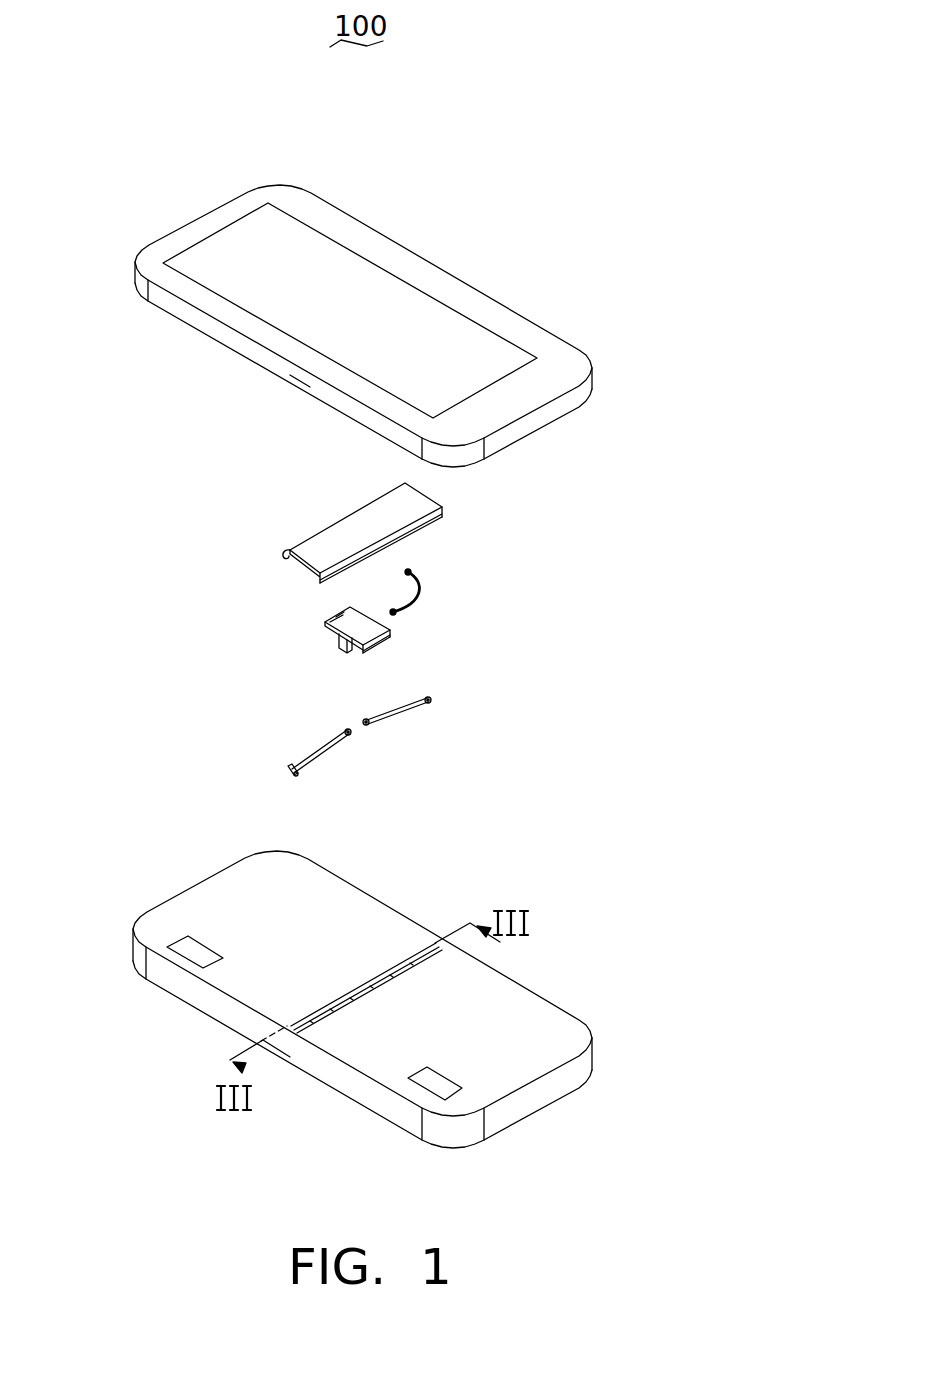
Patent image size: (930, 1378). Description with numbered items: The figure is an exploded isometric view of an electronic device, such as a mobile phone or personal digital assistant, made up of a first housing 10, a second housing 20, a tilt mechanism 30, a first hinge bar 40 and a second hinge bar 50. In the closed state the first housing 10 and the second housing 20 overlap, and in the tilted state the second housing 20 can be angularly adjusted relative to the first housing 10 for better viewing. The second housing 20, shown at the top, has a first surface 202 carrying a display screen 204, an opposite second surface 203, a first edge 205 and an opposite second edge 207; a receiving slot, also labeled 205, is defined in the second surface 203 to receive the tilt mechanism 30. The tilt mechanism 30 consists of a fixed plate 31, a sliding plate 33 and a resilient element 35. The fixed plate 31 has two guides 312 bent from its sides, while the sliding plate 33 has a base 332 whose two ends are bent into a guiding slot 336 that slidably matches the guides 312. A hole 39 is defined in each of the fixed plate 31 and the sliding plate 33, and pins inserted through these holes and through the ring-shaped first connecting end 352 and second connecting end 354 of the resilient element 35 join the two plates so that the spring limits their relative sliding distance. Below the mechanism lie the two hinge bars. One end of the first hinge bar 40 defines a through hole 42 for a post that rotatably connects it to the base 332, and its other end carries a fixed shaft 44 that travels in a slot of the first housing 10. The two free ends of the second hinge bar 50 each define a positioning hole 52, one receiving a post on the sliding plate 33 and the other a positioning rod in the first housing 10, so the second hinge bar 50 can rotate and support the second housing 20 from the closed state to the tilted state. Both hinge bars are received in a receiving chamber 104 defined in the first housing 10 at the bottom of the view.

The second housing 20 is at (508, 275).
The first surface 202 is at (193, 228).
The display screen 204 is at (316, 257).
The second edge 207 is at (418, 258).
The second surface 203 is at (222, 347).
The first edge 205 is at (303, 383).
The tilt mechanism 30 is at (220, 505).
The fixed plate 31 is at (398, 498).
The guides 312 is at (418, 520).
The hole 39 is at (368, 528).
The resilient element 35 is at (418, 592).
The first connecting end 352 is at (408, 572).
The second connecting end 354 is at (393, 612).
The sliding plate 33 is at (392, 657).
The guiding slot 336 is at (338, 620).
The base 332 is at (342, 642).
The first hinge bar 40 is at (322, 750).
The through hole 42 is at (349, 735).
The shaft 44 is at (290, 771).
The second hinge bar 50 is at (388, 713).
The positioning hole 52 is at (368, 727).
The first housing 10 is at (163, 880).
The receiving chamber 104 is at (298, 1020).